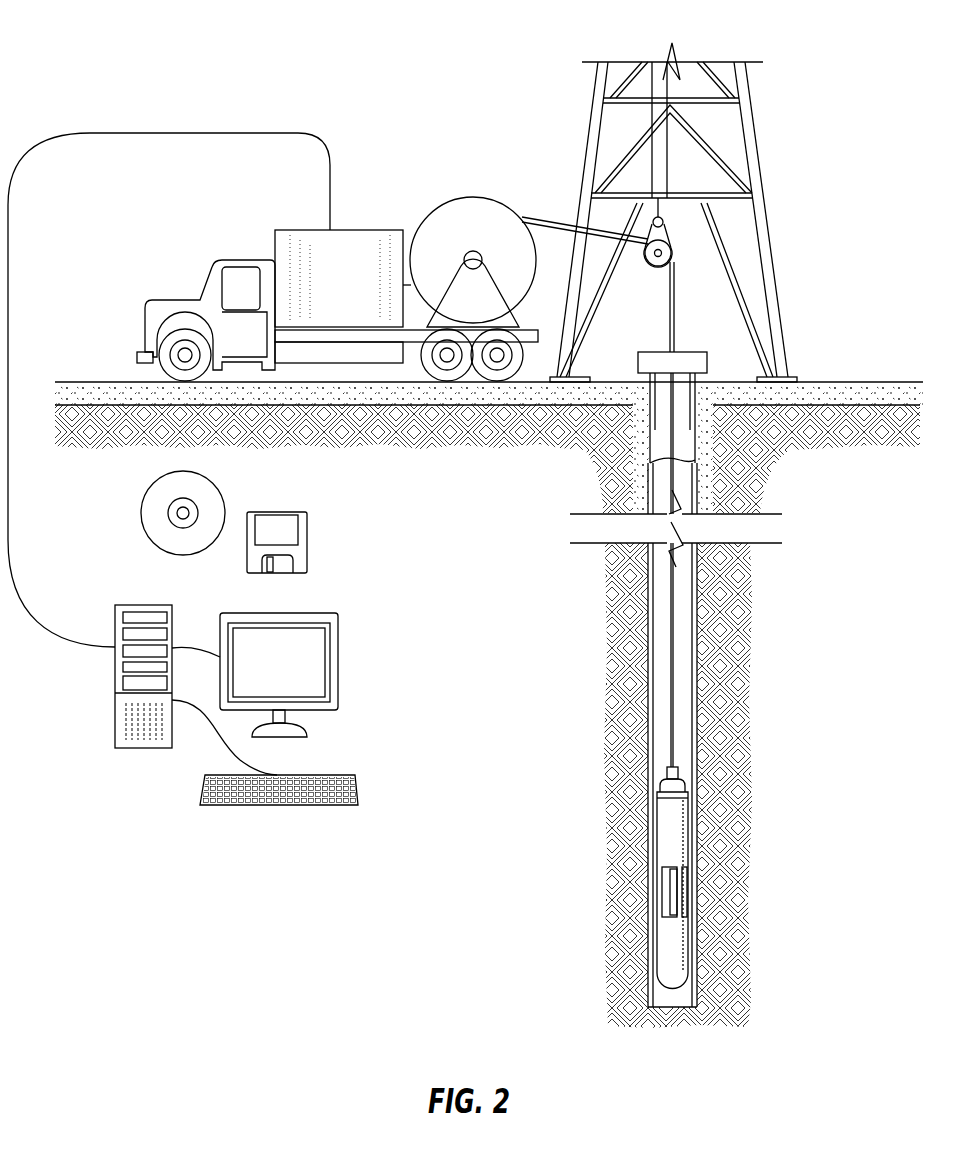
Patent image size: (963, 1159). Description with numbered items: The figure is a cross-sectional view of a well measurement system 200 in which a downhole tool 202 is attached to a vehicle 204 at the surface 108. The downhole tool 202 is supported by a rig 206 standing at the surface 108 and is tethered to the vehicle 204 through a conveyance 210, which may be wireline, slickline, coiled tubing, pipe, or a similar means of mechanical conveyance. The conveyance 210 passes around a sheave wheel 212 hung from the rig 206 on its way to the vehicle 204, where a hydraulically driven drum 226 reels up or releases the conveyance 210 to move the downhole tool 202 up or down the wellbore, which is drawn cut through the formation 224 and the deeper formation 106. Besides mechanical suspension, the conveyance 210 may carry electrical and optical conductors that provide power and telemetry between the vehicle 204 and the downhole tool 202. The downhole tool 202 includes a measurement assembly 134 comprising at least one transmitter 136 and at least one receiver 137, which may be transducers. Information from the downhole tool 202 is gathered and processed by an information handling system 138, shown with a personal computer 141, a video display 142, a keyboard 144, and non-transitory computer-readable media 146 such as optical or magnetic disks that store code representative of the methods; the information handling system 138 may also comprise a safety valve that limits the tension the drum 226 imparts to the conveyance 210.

The well measurement system 200 is at (140, 58).
The vehicle 204 is at (350, 230).
The drum 226 is at (473, 197).
The rig 206 is at (767, 213).
The sheave wheel 212 is at (657, 270).
The surface 108 is at (833, 382).
The formation 224 is at (766, 496).
The subterranean formation 106 is at (870, 624).
The non-transitory computer-readable media 146 is at (278, 512).
The personal computer 141 is at (145, 603).
The video display 142 is at (282, 613).
The keyboard 144 is at (360, 790).
The information handling system 138 is at (138, 832).
The conveyance 210 is at (672, 635).
The downhole tool 202 is at (638, 849).
The transmitter 136 is at (660, 903).
The receiver 137 is at (687, 900).
The measurement assembly 134 is at (641, 982).